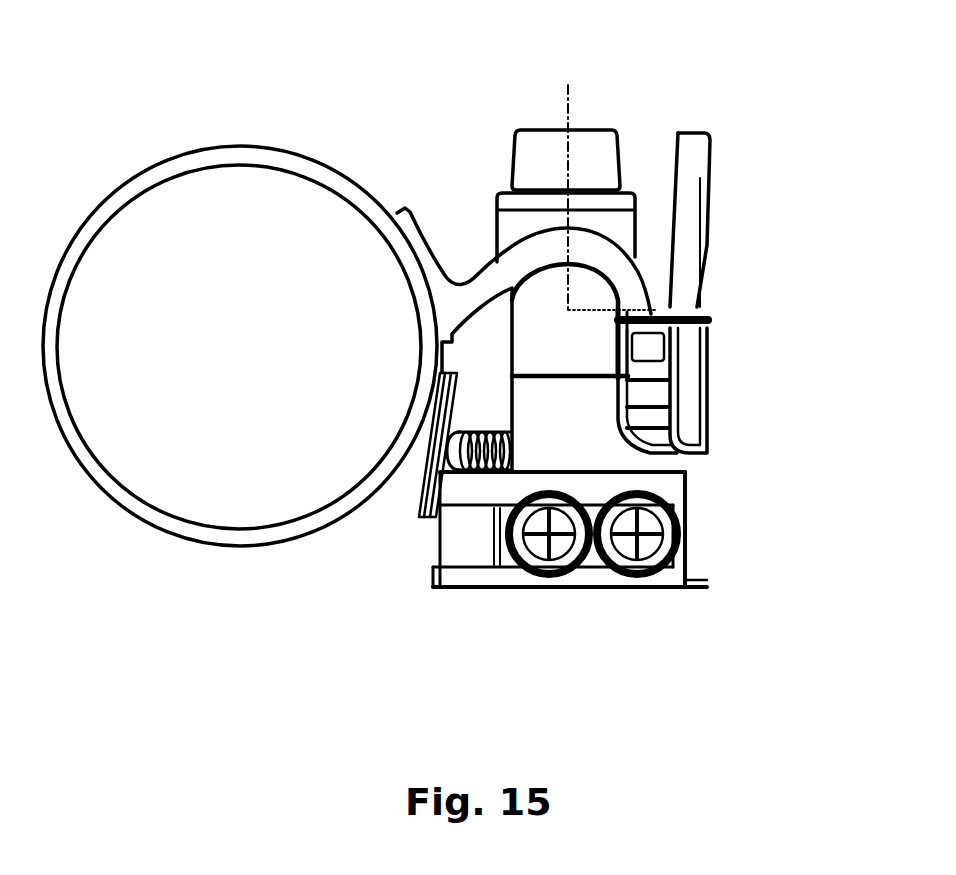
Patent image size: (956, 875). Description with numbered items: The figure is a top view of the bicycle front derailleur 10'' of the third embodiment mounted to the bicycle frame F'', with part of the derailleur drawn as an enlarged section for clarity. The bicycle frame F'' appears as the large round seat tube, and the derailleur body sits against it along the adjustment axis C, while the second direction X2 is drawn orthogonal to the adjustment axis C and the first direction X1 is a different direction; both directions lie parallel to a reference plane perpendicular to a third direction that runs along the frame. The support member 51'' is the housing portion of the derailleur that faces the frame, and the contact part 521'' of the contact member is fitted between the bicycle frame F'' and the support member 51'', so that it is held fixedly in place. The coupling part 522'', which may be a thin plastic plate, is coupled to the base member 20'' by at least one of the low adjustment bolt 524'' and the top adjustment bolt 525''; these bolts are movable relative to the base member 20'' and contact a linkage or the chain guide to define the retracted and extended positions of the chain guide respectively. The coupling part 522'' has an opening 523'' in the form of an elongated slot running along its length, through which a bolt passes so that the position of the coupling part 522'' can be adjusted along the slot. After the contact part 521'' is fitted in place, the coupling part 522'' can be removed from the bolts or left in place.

The bicycle frame F'' is at (240, 316).
The second direction X2 is at (568, 92).
The first direction X1 is at (404, 451).
The front derailleur 10'' is at (655, 301).
The base member 20'' is at (703, 296).
The adjustment axis C is at (700, 320).
The support member 51'' is at (570, 554).
The contact part 521'' is at (349, 422).
The coupling part 522'' is at (405, 490).
The opening 523'' is at (437, 540).
The low adjustment bolt 524'' is at (542, 572).
The top adjustment bolt 525'' is at (637, 572).